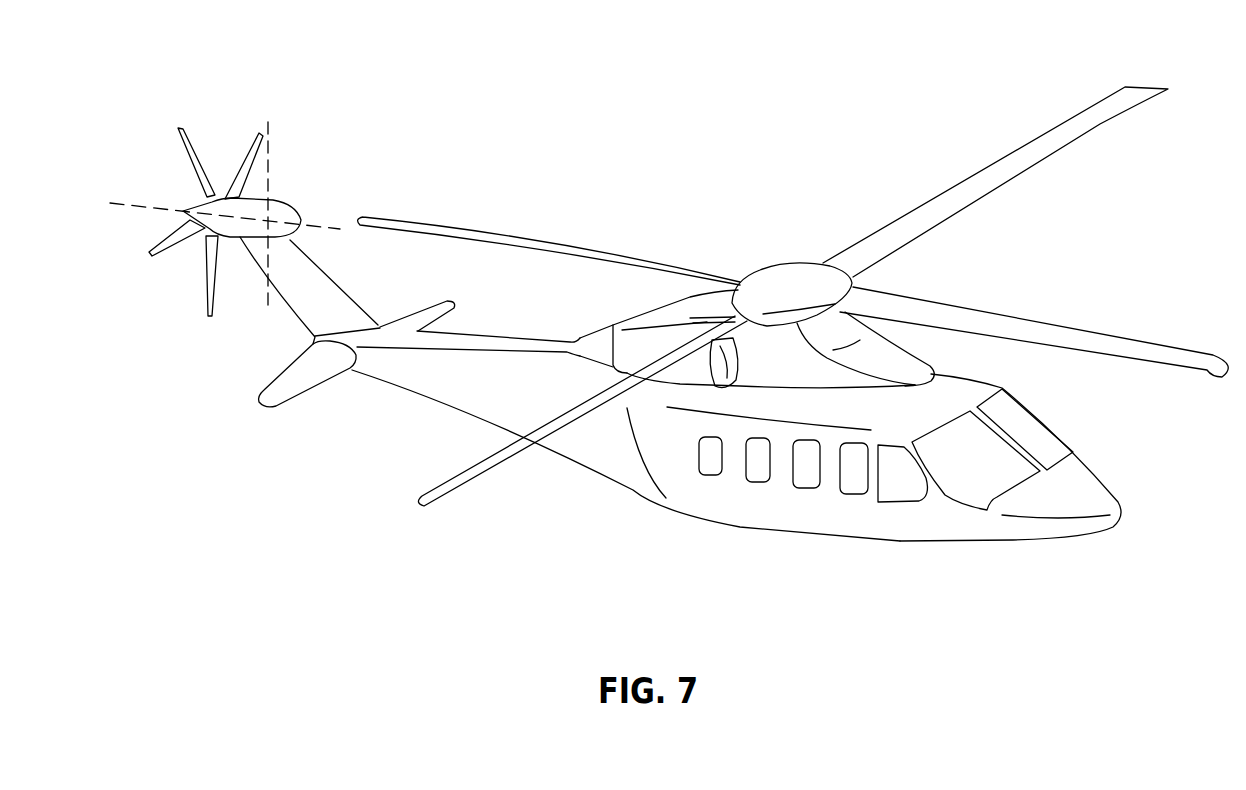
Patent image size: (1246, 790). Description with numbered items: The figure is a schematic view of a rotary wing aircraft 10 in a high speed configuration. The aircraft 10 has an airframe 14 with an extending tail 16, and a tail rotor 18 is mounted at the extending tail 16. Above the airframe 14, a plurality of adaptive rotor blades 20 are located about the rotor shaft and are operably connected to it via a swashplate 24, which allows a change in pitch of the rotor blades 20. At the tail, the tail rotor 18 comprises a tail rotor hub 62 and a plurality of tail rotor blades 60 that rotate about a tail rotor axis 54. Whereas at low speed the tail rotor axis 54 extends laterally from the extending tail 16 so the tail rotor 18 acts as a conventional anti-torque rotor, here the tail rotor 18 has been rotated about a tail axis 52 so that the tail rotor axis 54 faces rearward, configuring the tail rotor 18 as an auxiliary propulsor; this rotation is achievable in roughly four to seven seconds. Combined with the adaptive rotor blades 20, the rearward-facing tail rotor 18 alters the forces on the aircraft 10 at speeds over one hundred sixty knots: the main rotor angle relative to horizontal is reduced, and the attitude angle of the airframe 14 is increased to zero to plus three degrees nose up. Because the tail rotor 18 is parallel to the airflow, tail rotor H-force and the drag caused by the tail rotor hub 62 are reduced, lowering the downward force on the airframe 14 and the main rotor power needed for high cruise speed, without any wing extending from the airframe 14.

The rotary wing aircraft 10 is at (546, 76).
The airframe 14 is at (803, 520).
The extending tail 16 is at (456, 391).
The tail rotor 18 is at (137, 122).
The rotor blades 20 is at (500, 233).
The swashplate 24 is at (789, 272).
The tail axis 52 is at (270, 152).
The tail rotor axis 54 is at (137, 207).
The tail rotor blades 60 is at (207, 262).
The tail rotor hub 62 is at (280, 198).